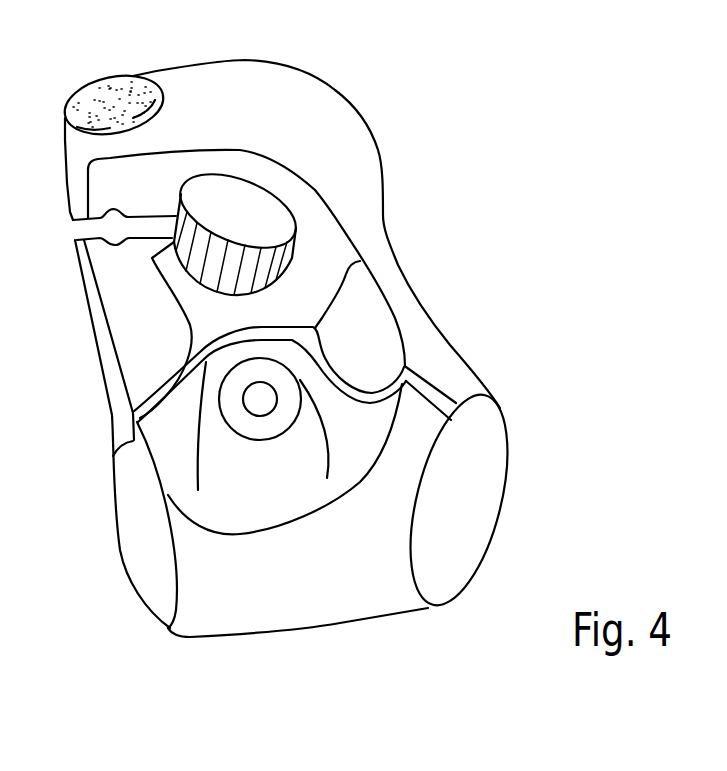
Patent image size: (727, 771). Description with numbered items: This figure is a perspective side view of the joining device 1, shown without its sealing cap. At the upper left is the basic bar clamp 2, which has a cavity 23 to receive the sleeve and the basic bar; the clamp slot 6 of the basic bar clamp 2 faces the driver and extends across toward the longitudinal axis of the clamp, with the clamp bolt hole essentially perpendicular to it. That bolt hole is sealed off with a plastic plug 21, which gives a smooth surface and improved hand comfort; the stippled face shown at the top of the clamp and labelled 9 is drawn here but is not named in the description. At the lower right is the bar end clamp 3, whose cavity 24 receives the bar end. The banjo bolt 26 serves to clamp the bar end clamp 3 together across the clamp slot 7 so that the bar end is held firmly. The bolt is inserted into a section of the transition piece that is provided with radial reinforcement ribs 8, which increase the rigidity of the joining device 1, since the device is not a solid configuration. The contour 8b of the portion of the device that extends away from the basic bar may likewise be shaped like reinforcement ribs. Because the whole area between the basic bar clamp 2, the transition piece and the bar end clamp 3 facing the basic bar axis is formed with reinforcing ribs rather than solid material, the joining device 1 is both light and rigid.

The joining device 1 is at (381, 111).
The basic bar clamp 2 is at (207, 60).
The bar end clamp 3 is at (464, 586).
The clamp slot 6 is at (84, 232).
The clamp slot 7 is at (448, 409).
The radial reinforcement ribs 8 is at (178, 302).
The contour 8b is at (387, 298).
The pad 9 is at (128, 78).
The plastic plug 21 is at (97, 102).
The cavity 23 is at (207, 240).
The cavity 24 is at (490, 508).
The banjo bolt 26 is at (270, 430).